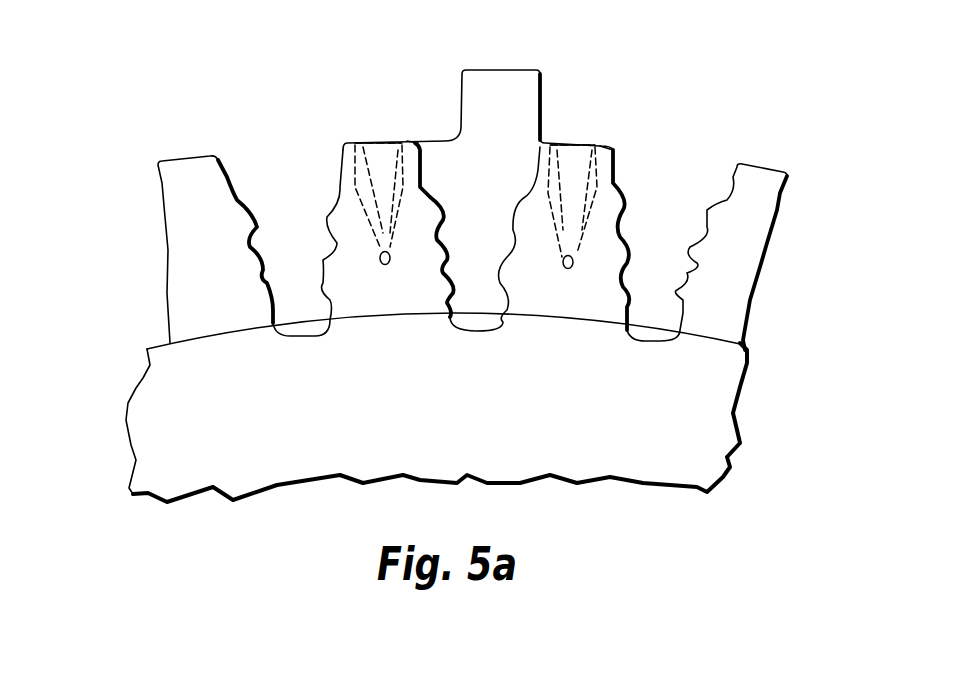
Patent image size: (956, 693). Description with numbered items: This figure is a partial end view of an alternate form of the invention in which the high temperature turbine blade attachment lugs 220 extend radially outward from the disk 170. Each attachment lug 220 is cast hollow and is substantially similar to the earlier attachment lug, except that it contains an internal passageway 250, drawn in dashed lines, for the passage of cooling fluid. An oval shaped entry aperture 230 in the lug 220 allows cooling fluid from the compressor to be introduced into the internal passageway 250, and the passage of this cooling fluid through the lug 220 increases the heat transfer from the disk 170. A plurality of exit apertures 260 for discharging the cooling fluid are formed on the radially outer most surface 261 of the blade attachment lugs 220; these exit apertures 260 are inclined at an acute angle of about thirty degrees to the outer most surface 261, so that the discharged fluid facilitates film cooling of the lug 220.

The disk 170 is at (682, 430).
The high temperature turbine blade attachment lug 220 is at (193, 167).
The oval shaped entry aperture 230 is at (384, 265).
The internal passageway 250 is at (363, 158).
The exit apertures 260 is at (390, 145).
The radially outer most surface 261 is at (400, 141).